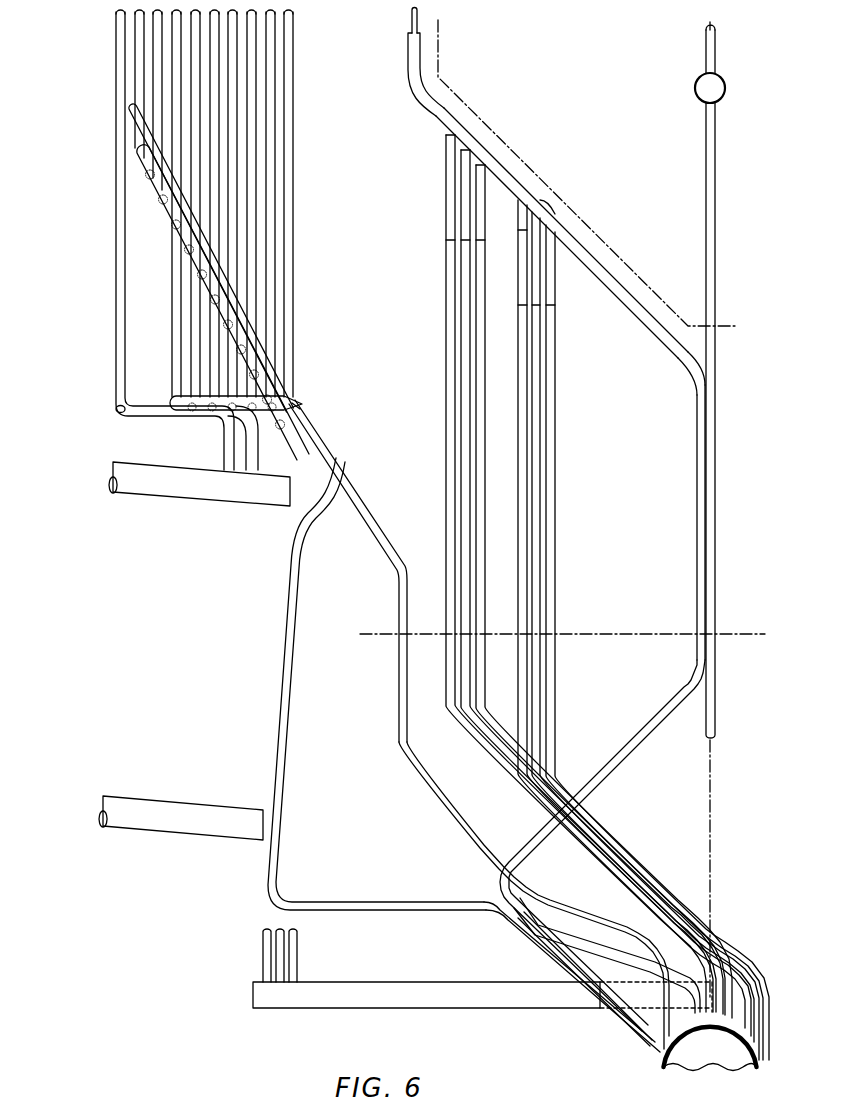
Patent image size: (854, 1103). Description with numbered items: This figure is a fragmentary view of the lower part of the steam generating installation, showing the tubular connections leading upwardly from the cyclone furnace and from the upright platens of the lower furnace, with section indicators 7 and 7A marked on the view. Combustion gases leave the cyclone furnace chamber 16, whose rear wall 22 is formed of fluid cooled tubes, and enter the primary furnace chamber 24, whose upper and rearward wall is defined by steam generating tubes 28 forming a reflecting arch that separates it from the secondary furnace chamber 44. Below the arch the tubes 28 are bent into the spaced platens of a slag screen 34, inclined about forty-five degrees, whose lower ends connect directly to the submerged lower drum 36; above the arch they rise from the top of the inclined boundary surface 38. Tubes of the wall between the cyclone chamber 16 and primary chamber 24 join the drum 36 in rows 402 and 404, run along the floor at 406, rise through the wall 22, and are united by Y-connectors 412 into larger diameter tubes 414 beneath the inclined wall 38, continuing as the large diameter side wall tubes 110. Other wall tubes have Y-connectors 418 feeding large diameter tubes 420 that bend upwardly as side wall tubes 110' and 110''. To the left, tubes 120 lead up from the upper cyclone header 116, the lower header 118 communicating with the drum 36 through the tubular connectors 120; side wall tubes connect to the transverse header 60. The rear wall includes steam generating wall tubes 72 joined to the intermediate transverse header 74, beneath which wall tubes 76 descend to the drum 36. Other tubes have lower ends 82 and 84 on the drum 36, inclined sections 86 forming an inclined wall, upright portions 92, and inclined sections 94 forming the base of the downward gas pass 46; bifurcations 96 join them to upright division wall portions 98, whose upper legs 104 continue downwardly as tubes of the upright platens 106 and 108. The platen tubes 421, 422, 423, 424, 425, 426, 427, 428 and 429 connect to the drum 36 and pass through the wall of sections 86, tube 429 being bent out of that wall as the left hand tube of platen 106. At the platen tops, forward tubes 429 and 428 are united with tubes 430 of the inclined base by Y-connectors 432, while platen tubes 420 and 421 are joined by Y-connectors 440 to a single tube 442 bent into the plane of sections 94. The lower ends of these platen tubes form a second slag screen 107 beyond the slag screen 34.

The section line 7- 7 is at (440, 20).
The section line 7A- 7A is at (130, 118).
The cyclone furnace chamber 16 is at (174, 656).
The rear wall 22 is at (291, 640).
The primary furnace chamber 24 is at (344, 716).
The steam generating tubes 28 is at (376, 520).
The slag screen 34 is at (460, 804).
The lower drum 36 is at (757, 1055).
The inclined boundary surface 38 is at (280, 330).
The secondary furnace chamber 44 is at (356, 242).
The downward gas pass 46 is at (612, 92).
The header 60 is at (244, 980).
The steam generating wall tubes 72 is at (716, 42).
The intermediate transverse header 74 is at (722, 86).
The wall tubes 76 is at (716, 222).
The lower end 82 is at (640, 962).
The lower end 84 is at (656, 955).
The inclined sections 86 is at (644, 738).
The upright portions 92 is at (697, 458).
The inclined sections 94 is at (646, 305).
The bifurcations 96 is at (422, 50).
The upright portions 98 is at (410, 28).
The upper legs 104 is at (438, 96).
The platen 106 is at (562, 568).
The slag screen 107 is at (516, 768).
The platen 108 is at (624, 598).
The large diameter side wall tubes 110 is at (214, 203).
The side wall tube 110' is at (169, 274).
The side wall tube 110'' is at (221, 302).
The upper cyclone header 116 is at (188, 483).
The lower header 118 is at (148, 820).
The tubular connectors 120 is at (118, 272).
The tube row 402 is at (630, 1018).
The tube row 404 is at (650, 1042).
The horizontal tube portions 406 is at (390, 910).
The Y-connector 412 is at (304, 422).
The larger diameter tubes 414 is at (288, 362).
The Y-connector 418 is at (294, 412).
The large diameter tube 420 is at (268, 402).
The platen tube 421 is at (547, 530).
The platen tube 422 is at (547, 450).
The platen tube 423 is at (547, 424).
The platen tube 424 is at (545, 344).
The platen tube 425 is at (552, 318).
The platen tube 426 is at (477, 596).
The platen tube 427 is at (466, 576).
The platen tube 428 is at (458, 548).
The platen tube 429 is at (441, 396).
The tube 430 is at (446, 138).
The Y-connector 432 is at (452, 152).
The Y-connector 440 is at (521, 222).
The single tube 442 is at (524, 205).